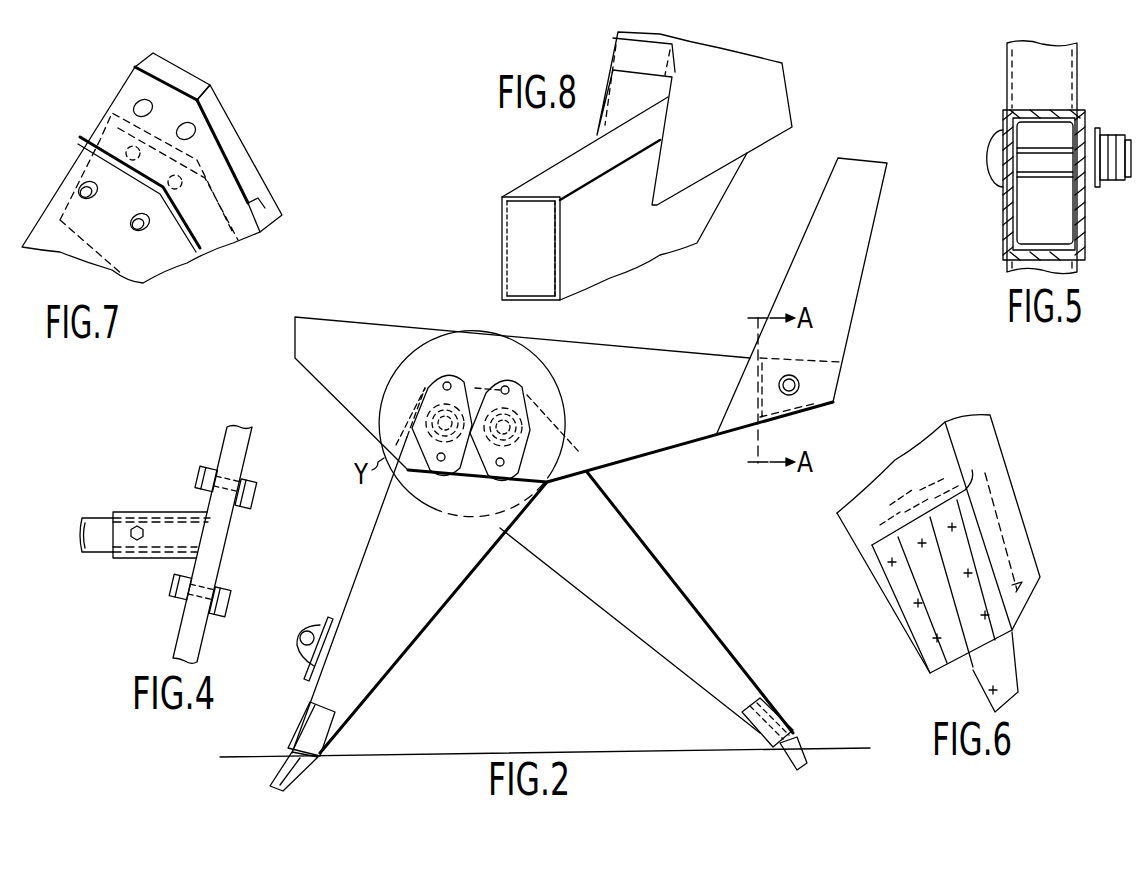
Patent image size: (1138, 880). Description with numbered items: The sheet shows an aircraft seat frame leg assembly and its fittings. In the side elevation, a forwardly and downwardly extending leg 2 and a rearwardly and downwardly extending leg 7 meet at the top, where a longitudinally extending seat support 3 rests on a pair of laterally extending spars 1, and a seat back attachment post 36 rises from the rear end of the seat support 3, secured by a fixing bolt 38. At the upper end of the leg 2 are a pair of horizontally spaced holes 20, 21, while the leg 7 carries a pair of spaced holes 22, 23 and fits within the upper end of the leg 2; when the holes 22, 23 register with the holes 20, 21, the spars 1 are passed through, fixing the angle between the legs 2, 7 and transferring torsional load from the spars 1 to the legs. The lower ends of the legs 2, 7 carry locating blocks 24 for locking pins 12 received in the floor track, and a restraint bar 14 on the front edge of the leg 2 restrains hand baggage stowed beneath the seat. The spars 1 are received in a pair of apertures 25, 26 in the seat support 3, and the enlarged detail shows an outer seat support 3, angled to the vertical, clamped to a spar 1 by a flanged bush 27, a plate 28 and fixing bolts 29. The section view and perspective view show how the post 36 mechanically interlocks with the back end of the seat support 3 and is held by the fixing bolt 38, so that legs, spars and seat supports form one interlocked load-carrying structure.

In FIG. 4, the laterally extending spar 1 is at (95, 520).
In FIG. 7, the forwardly and downwardly extending leg 2 is at (38, 226).
In FIG. 2, the forwardly and downwardly extending leg 2 is at (407, 598).
In FIG. 8, the seat support 3 is at (620, 243).
In FIG. 5, the seat support 3 is at (1003, 212).
In FIG. 2, the seat support 3 is at (658, 428).
In FIG. 7, the rearwardly and downwardly extending leg 7 is at (258, 205).
In FIG. 6, the rearwardly and downwardly extending leg 7 is at (1002, 493).
In FIG. 2, the rearwardly and downwardly extending leg 7 is at (636, 608).
In FIG. 6, the locking pin 12 is at (982, 667).
In FIG. 2, the locking pin 12 is at (295, 770).
In FIG. 2, the restraint bar 14 is at (318, 630).
In FIG. 7, the hole 20 is at (80, 185).
In FIG. 7, the hole 21 is at (146, 230).
In FIG. 7, the hole 22 is at (134, 104).
In FIG. 7, the hole 23 is at (196, 138).
In FIG. 6, the locating block 24 is at (940, 648).
In FIG. 2, the locating block 24 is at (334, 728).
In FIG. 2, the aperture 25 is at (446, 430).
In FIG. 2, the aperture 26 is at (514, 425).
In FIG. 4, the flanged bush 27 is at (160, 512).
In FIG. 4, the plate 28 is at (236, 528).
In FIG. 2, the plate 28 is at (438, 383).
In FIG. 4, the fixing bolt 29 is at (208, 465).
In FIG. 8, the seat back attachment post 36 is at (758, 111).
In FIG. 5, the seat back attachment post 36 is at (1053, 94).
In FIG. 2, the seat back attachment post 36 is at (841, 262).
In FIG. 5, the fixing bolt 38 is at (1110, 150).
In FIG. 2, the fixing bolt 38 is at (800, 386).